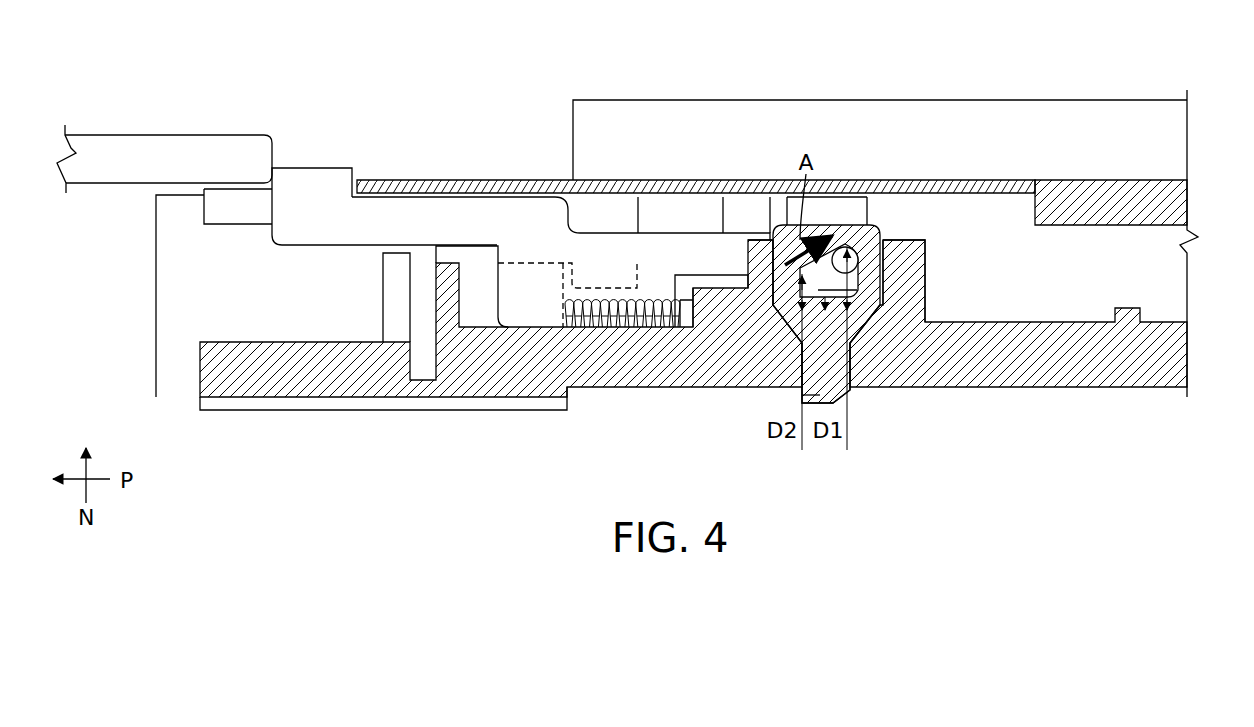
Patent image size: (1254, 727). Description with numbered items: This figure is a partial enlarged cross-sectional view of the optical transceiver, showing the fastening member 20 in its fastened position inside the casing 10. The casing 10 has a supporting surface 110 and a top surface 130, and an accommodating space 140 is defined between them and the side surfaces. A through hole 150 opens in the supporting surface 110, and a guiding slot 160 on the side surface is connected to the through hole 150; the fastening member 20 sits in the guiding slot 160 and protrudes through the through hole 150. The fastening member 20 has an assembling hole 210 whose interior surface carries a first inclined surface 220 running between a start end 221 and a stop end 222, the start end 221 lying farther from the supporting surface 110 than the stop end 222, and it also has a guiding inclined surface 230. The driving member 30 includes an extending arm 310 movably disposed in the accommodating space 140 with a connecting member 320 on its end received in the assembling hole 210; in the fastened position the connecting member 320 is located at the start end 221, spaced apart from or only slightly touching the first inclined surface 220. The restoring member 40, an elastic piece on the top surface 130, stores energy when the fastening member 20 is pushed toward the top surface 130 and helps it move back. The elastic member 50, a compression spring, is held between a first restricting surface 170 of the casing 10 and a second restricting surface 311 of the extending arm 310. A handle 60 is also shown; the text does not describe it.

The casing 10 is at (1152, 90).
The fastening member 20 is at (802, 395).
The driving member 30 is at (413, 198).
The restoring member 40 is at (832, 208).
The elastic member 50 is at (663, 292).
The handle 60 is at (110, 150).
The supporting surface 110 is at (1010, 297).
The top surface 130 is at (968, 135).
The accommodating space 140 is at (1090, 287).
The through hole 150 is at (849, 392).
The guiding slot 160 is at (884, 275).
The first restricting surface 170 is at (572, 275).
The assembling hole 210 is at (850, 330).
The first inclined surface 220 is at (806, 153).
The start end 221 is at (851, 240).
The stop end 222 is at (753, 240).
The guiding inclined surface 230 is at (845, 403).
The extending arm 310 is at (468, 215).
The second restricting surface 311 is at (682, 300).
The connecting member 320 is at (883, 240).